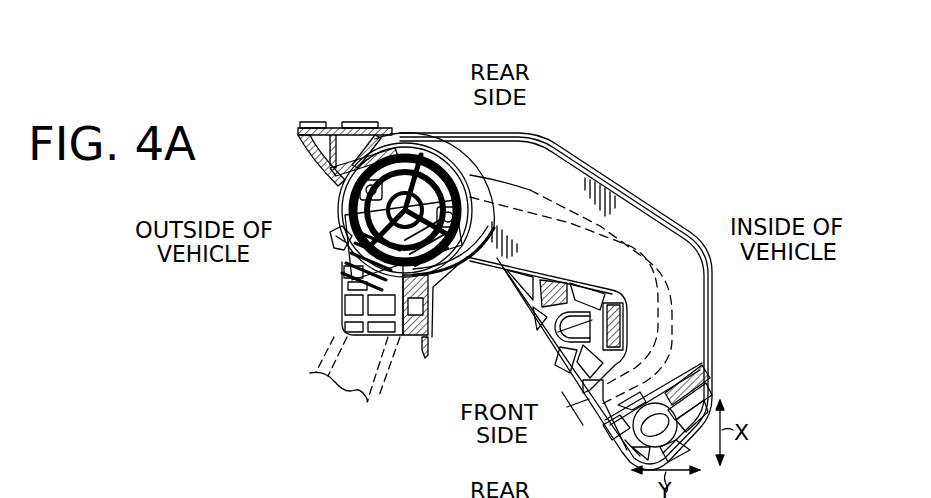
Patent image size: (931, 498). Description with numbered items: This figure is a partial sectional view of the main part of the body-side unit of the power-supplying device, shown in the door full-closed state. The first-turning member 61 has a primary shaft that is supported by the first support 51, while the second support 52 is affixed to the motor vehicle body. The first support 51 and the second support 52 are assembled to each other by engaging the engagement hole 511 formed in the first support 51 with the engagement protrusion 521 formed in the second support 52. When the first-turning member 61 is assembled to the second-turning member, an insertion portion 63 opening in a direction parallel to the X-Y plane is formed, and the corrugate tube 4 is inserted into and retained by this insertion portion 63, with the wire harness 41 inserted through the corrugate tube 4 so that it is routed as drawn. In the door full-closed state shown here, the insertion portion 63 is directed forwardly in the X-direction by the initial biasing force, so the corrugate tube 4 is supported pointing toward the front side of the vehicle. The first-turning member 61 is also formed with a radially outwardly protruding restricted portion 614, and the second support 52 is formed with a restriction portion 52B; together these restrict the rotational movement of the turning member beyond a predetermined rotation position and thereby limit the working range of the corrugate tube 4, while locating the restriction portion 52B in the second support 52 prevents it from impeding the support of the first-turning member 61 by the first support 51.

The corrugate tube 4 is at (375, 368).
The wire harness 41 is at (530, 190).
The first support 51 is at (578, 182).
The second support 52 is at (330, 128).
The restriction portion 52B is at (346, 128).
The engagement hole 511 is at (553, 330).
The engagement protrusion 521 is at (598, 340).
The first-turning member 61 is at (343, 258).
The insertion portion 63 is at (347, 268).
The restricted portion 614 is at (335, 234).